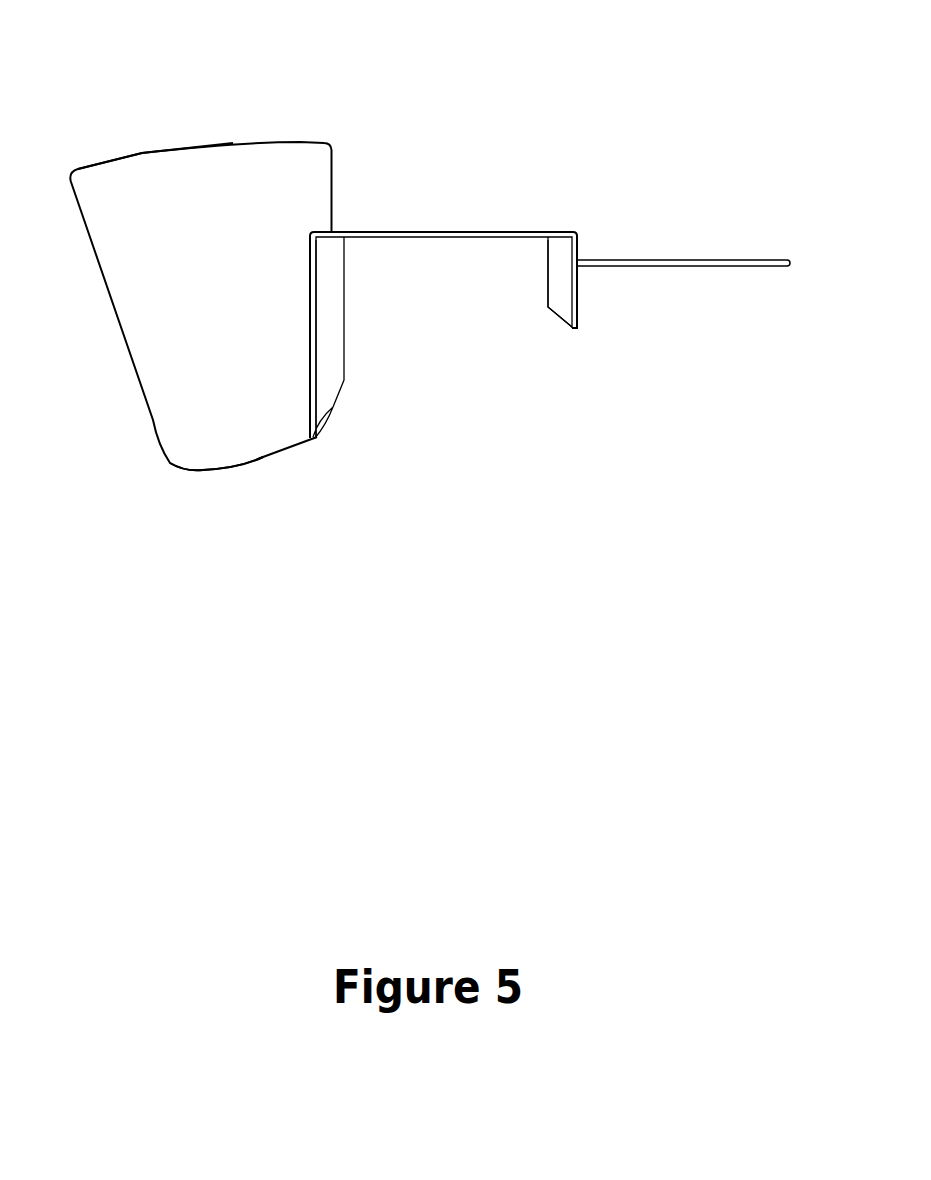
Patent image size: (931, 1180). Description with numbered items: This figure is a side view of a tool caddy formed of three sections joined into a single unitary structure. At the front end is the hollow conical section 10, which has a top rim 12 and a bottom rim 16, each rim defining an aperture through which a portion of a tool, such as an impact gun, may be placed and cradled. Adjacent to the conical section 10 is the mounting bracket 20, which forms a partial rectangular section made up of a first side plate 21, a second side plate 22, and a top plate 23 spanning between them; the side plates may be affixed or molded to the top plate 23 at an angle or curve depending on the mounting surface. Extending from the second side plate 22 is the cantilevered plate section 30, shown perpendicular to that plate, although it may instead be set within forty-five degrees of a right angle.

The conical section 10 is at (138, 307).
The top rim 12 is at (142, 153).
The bottom rim 16 is at (263, 458).
The mounting bracket 20 is at (412, 217).
The first side plate 21 is at (337, 367).
The second side plate 22 is at (568, 325).
The top plate 23 is at (443, 233).
The cantilevered plate section 30 is at (652, 260).